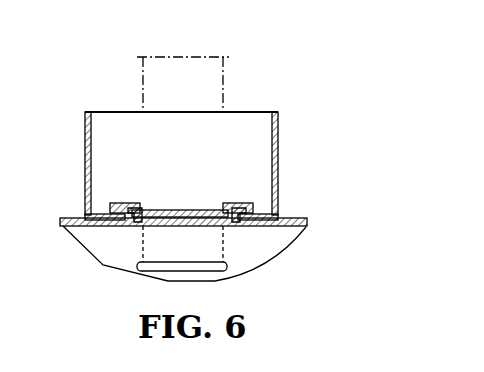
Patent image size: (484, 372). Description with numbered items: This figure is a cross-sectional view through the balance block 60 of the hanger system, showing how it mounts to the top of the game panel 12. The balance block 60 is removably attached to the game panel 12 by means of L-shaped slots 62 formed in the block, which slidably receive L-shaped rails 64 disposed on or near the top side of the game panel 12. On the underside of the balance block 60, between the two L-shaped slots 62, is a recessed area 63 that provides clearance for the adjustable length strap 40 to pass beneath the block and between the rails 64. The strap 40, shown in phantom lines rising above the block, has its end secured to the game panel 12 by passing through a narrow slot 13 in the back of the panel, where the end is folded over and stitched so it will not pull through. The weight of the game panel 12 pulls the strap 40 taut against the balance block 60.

The balance block 60 is at (83, 132).
The adjustable length strap 40 is at (219, 82).
The game panel 12 is at (69, 216).
The narrow slot 13 is at (175, 268).
The L-shaped slots 62 is at (114, 203).
The recessed area 63 is at (205, 220).
The L-shaped rails 64 is at (129, 207).